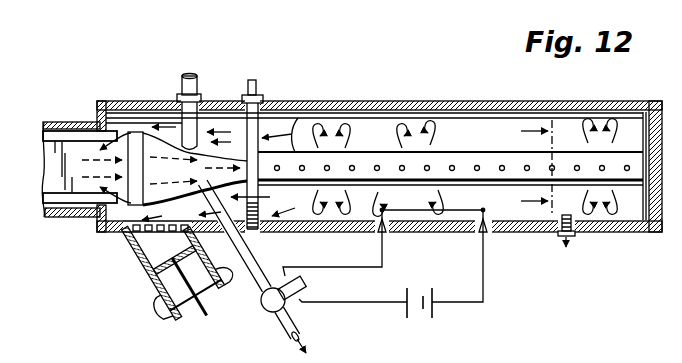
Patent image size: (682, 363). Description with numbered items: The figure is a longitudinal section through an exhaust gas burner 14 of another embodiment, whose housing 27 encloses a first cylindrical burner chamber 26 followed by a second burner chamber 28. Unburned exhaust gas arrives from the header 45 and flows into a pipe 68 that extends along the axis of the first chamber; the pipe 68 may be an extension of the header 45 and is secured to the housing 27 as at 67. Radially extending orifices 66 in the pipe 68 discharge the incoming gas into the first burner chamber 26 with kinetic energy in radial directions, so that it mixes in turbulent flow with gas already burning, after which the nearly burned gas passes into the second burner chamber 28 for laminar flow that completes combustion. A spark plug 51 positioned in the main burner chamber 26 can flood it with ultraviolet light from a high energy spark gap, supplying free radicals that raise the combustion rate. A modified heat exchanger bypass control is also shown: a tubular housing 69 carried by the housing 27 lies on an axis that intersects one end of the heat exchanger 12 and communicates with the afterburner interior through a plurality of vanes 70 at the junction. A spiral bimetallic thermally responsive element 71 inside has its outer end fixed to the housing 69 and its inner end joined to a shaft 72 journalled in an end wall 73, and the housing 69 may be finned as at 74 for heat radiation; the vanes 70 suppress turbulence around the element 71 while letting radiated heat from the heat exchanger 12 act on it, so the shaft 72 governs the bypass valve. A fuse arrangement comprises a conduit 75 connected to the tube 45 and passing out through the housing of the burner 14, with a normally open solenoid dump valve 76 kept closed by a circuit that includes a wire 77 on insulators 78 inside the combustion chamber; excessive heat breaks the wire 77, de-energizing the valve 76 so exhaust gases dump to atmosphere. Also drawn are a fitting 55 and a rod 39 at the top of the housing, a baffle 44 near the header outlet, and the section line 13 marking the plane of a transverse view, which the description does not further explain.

The heat exchanger 12 is at (66, 118).
The header 45 is at (168, 130).
The inlet fitting 55 is at (181, 98).
The second burner chamber 28 is at (216, 108).
The adjusting rod 39 is at (262, 97).
The baffle 44 is at (265, 130).
The pipe 68 is at (294, 150).
The radially extending orifices 66 is at (475, 164).
The first cylindrical burner chamber 26 is at (362, 120).
The housing 27 is at (536, 105).
The securing point 67 is at (645, 111).
The burner 14 is at (530, 79).
The section line 13 is at (523, 166).
The tubular housing 69 is at (130, 243).
The vanes 70 is at (154, 225).
The spiral bimetallic thermally responsive element 71 is at (148, 268).
The shaft 72 is at (208, 300).
The end wall 73 is at (182, 312).
The fins 74 is at (157, 310).
The conduit 75 is at (252, 258).
The dump valve 76 is at (300, 283).
The wire 77 is at (407, 232).
The insulators 78 is at (489, 233).
The spark plug 51 is at (571, 243).